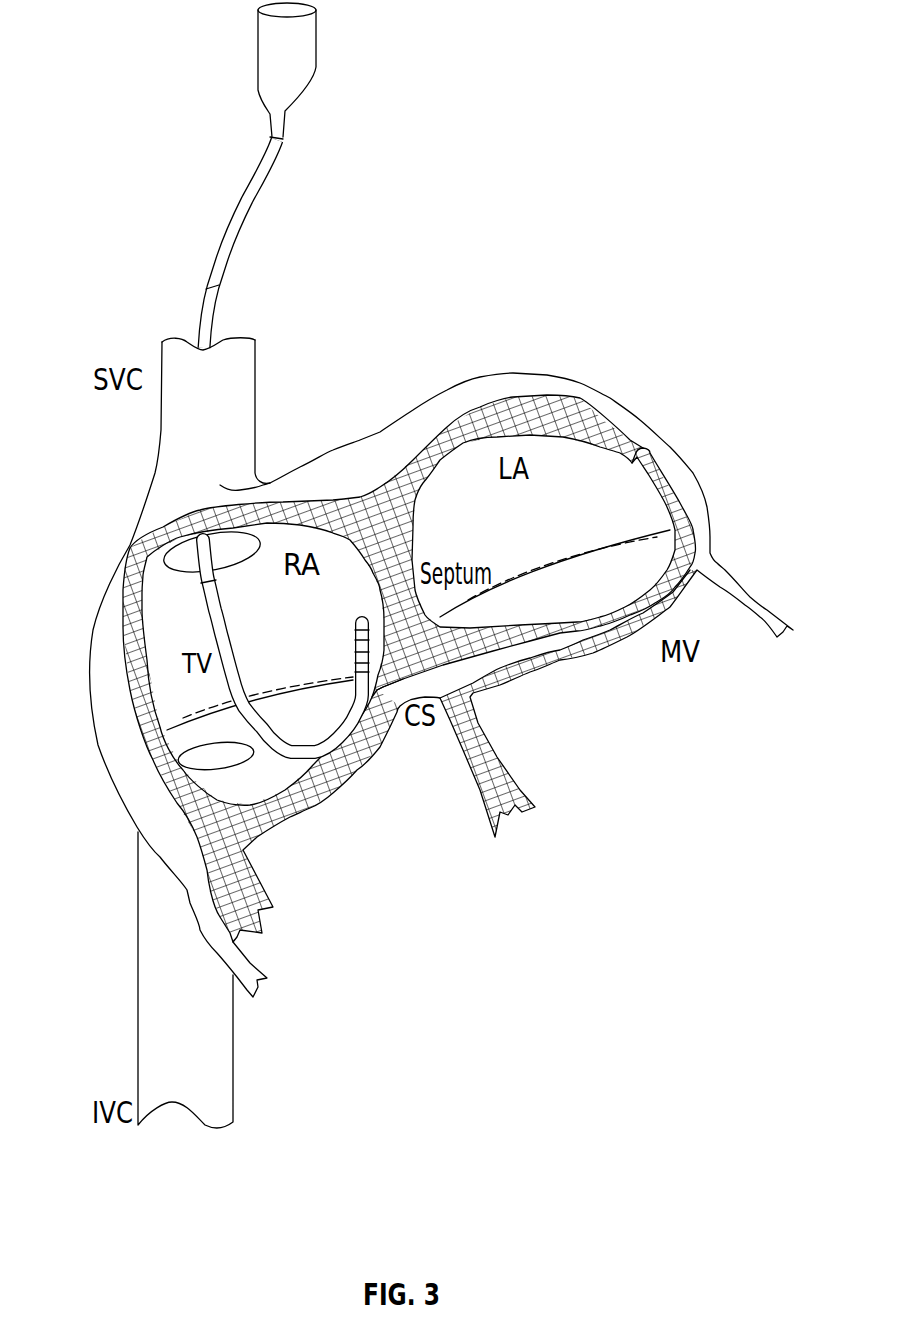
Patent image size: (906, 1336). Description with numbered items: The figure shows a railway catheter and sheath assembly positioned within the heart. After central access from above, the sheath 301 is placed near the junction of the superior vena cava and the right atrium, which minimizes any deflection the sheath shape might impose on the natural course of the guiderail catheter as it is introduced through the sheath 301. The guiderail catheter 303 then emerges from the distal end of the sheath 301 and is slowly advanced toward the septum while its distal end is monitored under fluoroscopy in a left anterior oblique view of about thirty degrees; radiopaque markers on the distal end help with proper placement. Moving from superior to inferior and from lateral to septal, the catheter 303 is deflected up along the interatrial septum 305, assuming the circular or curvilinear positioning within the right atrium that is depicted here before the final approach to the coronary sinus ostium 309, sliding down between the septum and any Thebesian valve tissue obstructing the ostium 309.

The sheath 301 is at (170, 558).
The catheter body 303 is at (220, 647).
The interatrial septum 305 is at (353, 628).
The coronary sinus ostium 309 is at (380, 692).